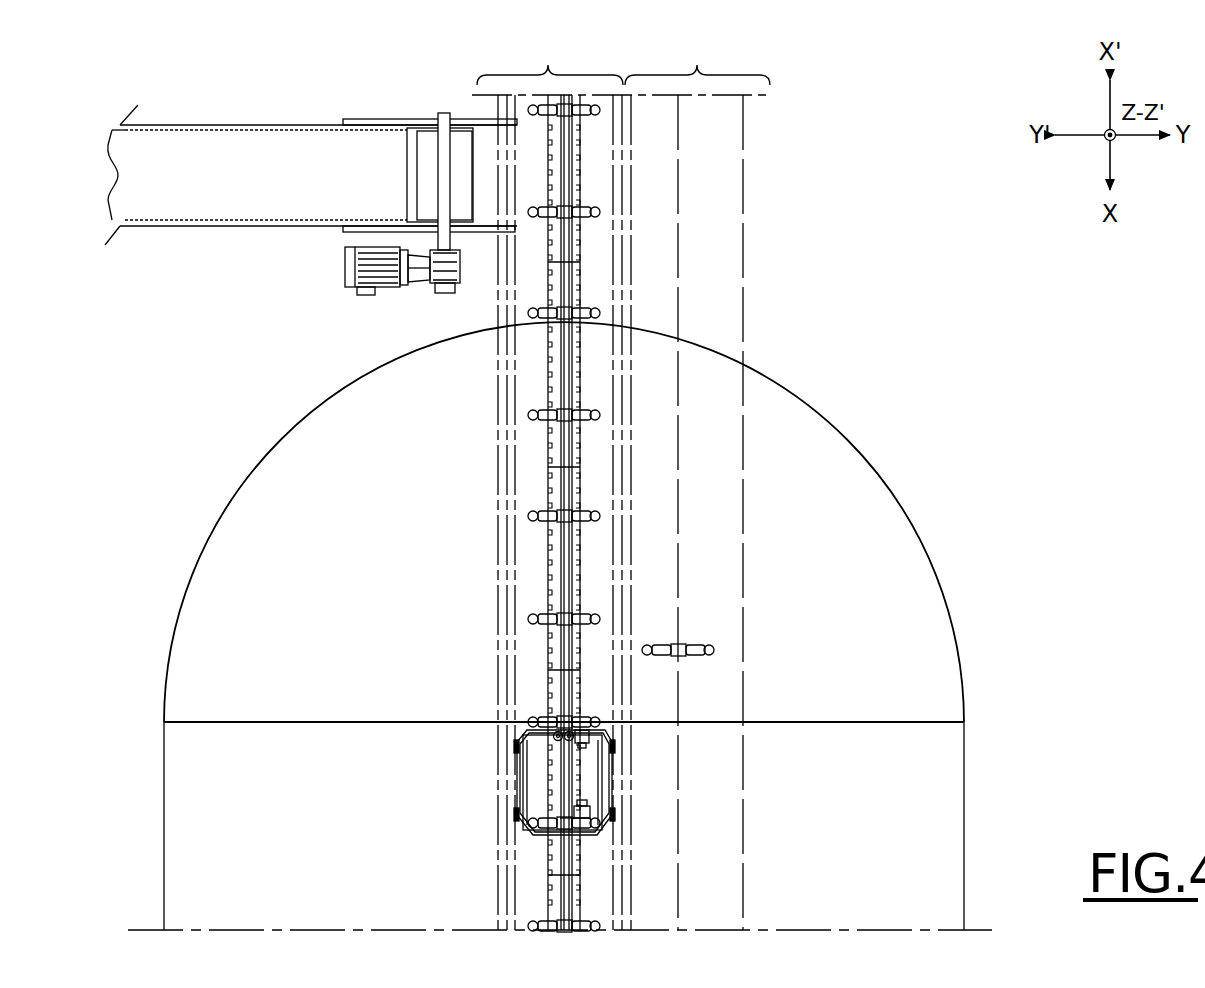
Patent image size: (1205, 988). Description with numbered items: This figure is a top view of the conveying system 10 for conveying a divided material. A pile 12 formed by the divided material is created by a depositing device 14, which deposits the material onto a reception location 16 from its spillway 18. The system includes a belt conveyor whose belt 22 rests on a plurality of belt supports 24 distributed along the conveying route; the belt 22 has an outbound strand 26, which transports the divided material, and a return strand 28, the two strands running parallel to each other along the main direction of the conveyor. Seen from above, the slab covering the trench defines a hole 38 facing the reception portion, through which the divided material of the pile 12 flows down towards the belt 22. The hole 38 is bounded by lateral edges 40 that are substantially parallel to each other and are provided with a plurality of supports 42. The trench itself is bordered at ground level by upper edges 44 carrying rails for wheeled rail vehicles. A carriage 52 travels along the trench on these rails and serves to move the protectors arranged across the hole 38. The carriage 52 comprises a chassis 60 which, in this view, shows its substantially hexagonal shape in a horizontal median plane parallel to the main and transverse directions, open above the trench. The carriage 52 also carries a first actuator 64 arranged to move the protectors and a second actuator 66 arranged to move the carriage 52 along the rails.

The conveying system 10 is at (1015, 392).
The pile 12 is at (564, 626).
The depositing device 14 is at (202, 118).
The reception location 16 is at (680, 144).
The spillway 18 is at (458, 117).
The belt 22 is at (598, 263).
The belt supports 24 is at (600, 110).
The outbound strand 26 is at (550, 478).
The return strand 28 is at (697, 478).
The hole 38 is at (565, 473).
The lateral edges 40 is at (592, 451).
The supports 42 is at (580, 485).
The upper edges 44 is at (614, 793).
The carriage 52 is at (518, 793).
The chassis 60 is at (609, 761).
The first actuator 64 is at (600, 729).
The second actuator 66 is at (612, 824).